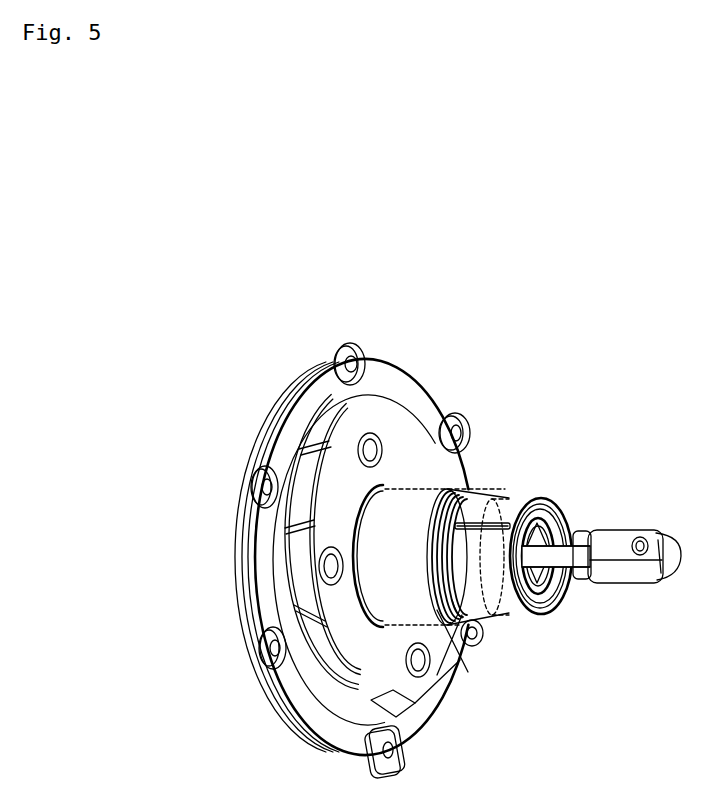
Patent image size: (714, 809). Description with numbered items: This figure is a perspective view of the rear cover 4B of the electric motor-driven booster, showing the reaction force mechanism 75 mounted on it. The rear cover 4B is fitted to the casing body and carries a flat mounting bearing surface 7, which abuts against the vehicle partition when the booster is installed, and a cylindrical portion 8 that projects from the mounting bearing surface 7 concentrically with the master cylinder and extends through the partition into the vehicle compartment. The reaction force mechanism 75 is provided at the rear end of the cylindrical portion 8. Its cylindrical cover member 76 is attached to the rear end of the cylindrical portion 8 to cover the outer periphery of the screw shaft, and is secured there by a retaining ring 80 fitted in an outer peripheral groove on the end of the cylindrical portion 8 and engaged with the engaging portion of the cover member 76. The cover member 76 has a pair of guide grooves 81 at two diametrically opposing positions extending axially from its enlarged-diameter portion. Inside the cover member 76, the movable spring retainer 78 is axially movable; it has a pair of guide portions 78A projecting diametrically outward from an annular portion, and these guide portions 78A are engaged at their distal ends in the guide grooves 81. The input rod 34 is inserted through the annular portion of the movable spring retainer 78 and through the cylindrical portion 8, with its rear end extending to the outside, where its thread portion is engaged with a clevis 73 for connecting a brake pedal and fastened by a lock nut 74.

The rear cover 4B is at (383, 383).
The mounting bearing surface 7 is at (403, 437).
The cylindrical portion 8 is at (418, 500).
The retaining ring 80 is at (440, 628).
The cover member 76 is at (518, 499).
The guide portions 78A is at (507, 612).
The guide grooves 81 is at (494, 518).
The movable spring retainer 78 is at (545, 502).
The input rod 34 is at (567, 598).
The lock nut 74 is at (627, 532).
The clevis 73 is at (632, 520).
The reaction force mechanism 75 is at (560, 446).